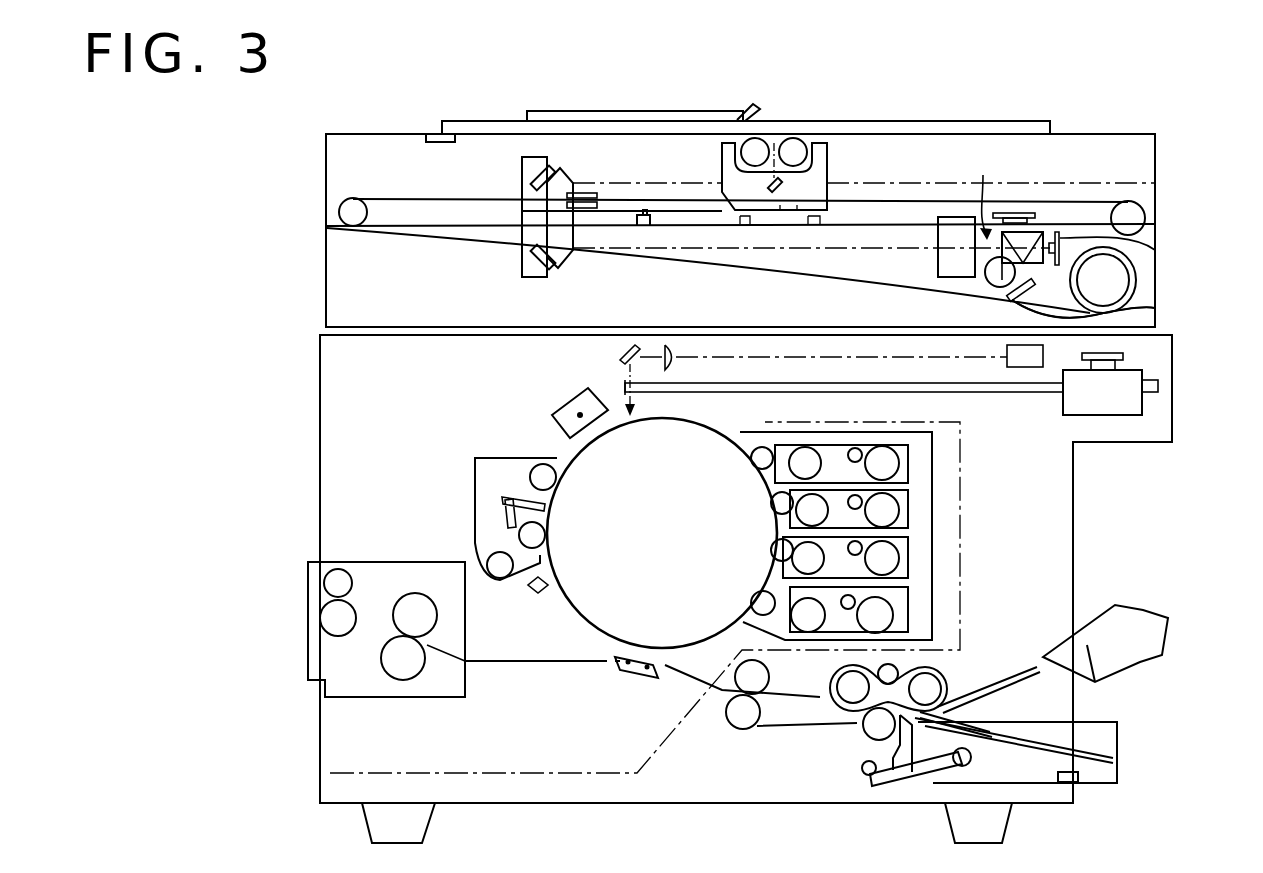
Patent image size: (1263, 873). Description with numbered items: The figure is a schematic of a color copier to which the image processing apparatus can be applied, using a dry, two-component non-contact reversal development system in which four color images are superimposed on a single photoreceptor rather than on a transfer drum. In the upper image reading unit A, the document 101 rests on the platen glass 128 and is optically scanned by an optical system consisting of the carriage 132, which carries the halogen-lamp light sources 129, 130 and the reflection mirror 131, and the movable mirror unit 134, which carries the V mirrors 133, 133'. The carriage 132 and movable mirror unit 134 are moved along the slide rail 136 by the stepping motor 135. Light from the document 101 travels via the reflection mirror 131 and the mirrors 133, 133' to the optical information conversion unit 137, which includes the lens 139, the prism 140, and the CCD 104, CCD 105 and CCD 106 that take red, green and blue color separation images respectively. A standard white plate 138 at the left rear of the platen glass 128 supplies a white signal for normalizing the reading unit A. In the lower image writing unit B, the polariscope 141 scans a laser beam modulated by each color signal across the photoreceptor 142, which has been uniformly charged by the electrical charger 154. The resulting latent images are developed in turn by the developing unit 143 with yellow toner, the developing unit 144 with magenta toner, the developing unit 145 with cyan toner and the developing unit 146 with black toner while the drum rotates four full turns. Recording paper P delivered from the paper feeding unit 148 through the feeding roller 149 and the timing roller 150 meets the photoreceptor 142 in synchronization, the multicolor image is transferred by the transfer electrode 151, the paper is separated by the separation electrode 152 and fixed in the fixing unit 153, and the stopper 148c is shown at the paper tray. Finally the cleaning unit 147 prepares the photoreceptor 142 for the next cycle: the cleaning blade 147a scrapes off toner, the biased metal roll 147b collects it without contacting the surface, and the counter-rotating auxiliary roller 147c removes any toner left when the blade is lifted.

The document 101 is at (665, 111).
The CCD 104 is at (1010, 212).
The CCD 105 is at (1155, 250).
The CCD 106 is at (1153, 315).
The platen glass 128 is at (953, 121).
The light source 129 is at (762, 145).
The light source 130 is at (797, 150).
The reflection mirror 131 is at (782, 188).
The carriage 132 is at (828, 153).
The V mirror 133 is at (559, 126).
The V mirror 133' is at (583, 281).
The movable mirror unit 134 is at (518, 257).
The stepping motor 135 is at (992, 272).
The slide rail 136 is at (420, 222).
The optical information conversion unit 137 is at (1010, 167).
The standard white plate 138 is at (433, 133).
The lens 139 is at (937, 268).
The prism 140 is at (1035, 232).
The polariscope 141 is at (1158, 390).
The photoreceptor 142 is at (563, 602).
The developing unit 143 is at (910, 465).
The developing unit 144 is at (910, 509).
The developing unit 145 is at (910, 553).
The developing unit 146 is at (910, 600).
The cleaning unit 147 is at (477, 457).
The cleaning blade 147a is at (553, 503).
The metal roll 147b is at (547, 538).
The auxiliary roller 147c is at (538, 463).
The paper feeding unit 148 is at (1097, 737).
The stopper 148c is at (1083, 779).
The feeding roller 149 is at (930, 688).
The timing roller 150 is at (737, 718).
The transfer electrode 151 is at (645, 685).
The separation electrode 152 is at (620, 672).
The fixing unit 153 is at (322, 597).
The electrical charger 154 is at (570, 397).
The image reading unit A is at (950, 181).
The image writing unit B is at (1035, 430).
The recording paper P is at (1105, 757).